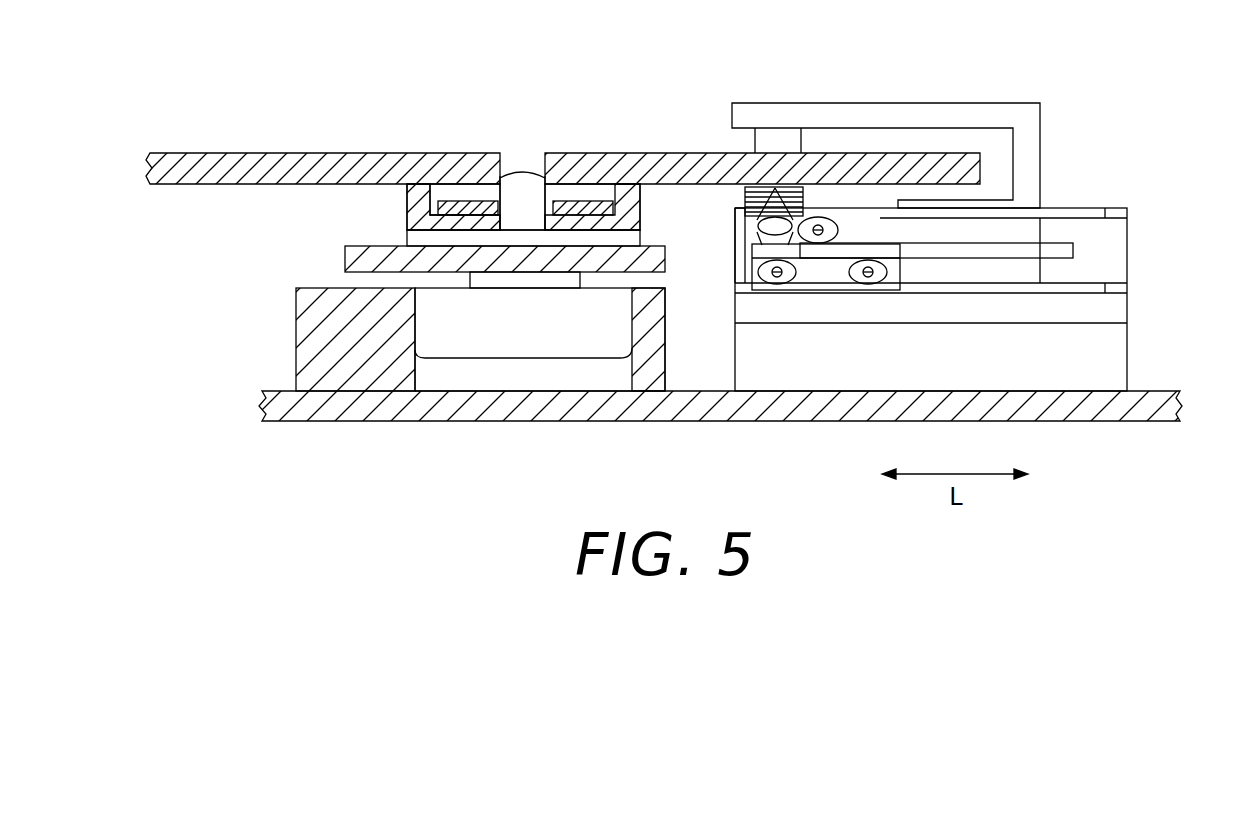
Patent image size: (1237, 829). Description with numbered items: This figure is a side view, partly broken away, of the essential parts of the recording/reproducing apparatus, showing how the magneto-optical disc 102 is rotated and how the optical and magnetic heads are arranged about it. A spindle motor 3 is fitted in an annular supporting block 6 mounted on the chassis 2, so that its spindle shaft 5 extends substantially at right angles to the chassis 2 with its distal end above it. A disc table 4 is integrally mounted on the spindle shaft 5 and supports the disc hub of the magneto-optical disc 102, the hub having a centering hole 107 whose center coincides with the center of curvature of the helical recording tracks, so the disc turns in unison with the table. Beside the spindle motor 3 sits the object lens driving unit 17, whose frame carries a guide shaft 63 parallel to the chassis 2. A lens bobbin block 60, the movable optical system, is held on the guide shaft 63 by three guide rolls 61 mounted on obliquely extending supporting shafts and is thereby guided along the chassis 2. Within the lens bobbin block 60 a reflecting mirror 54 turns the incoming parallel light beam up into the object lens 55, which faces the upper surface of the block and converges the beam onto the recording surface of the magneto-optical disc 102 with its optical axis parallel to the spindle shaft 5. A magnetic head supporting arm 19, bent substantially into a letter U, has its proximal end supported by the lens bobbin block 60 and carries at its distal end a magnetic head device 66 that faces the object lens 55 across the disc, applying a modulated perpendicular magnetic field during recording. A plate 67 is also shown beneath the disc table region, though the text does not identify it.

The chassis 2 is at (747, 398).
The spindle motor 3 is at (585, 345).
The disc table 4 is at (626, 168).
The spindle shaft 5 is at (530, 178).
The supporting block 6 is at (383, 368).
The object lens driving unit 17 is at (1108, 313).
The magnetic head supporting arm 19 is at (1030, 140).
The reflecting mirror 54 is at (746, 240).
The object lens 55 is at (808, 195).
The lens bobbin block 60 is at (897, 275).
The guide rolls 61 is at (789, 280).
The guide shaft 63 is at (1058, 250).
The magnetic head device 66 is at (778, 145).
The plate 67 is at (345, 262).
The magneto-optical disc 102 is at (328, 156).
The centering hole 107 is at (492, 206).